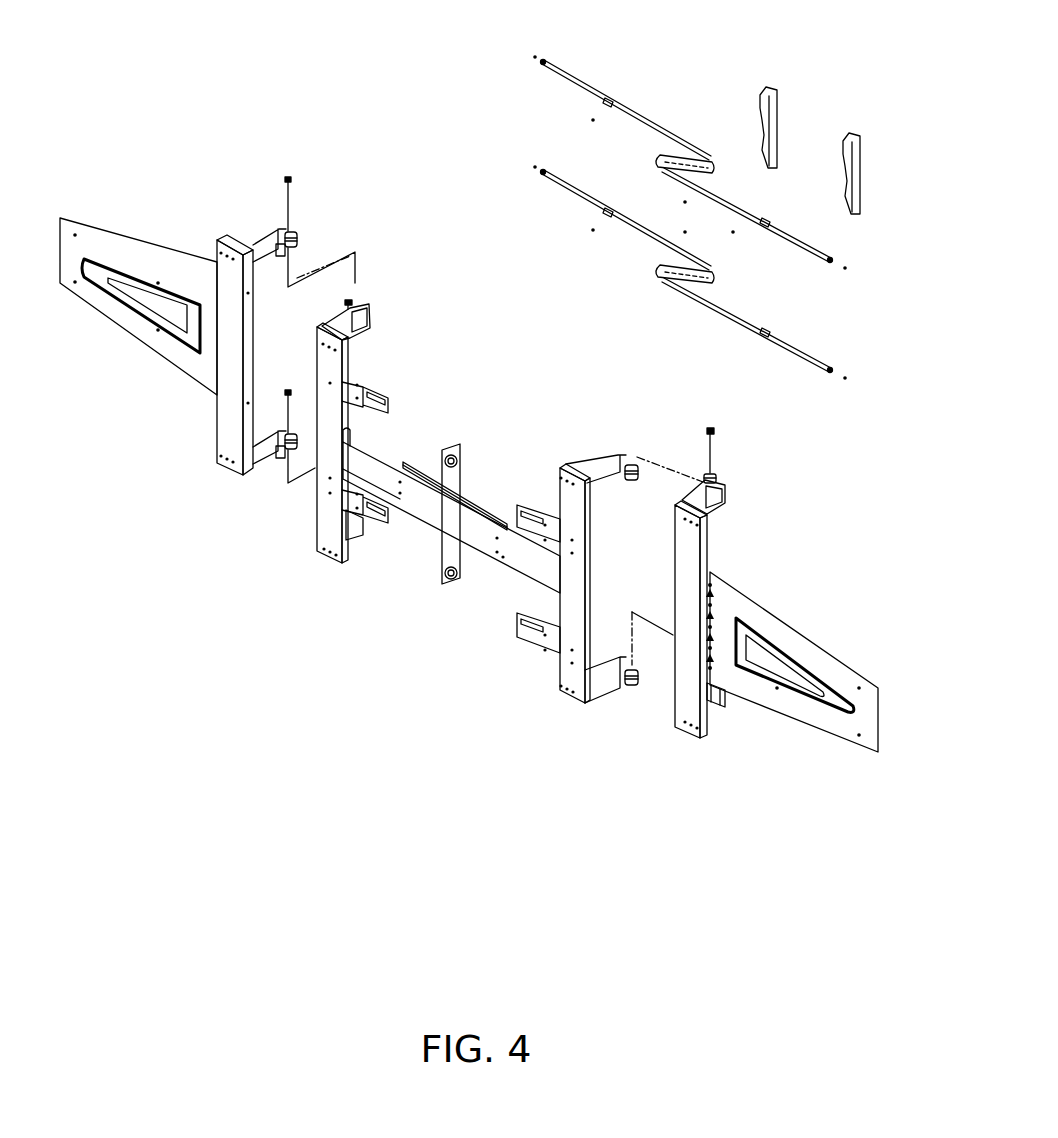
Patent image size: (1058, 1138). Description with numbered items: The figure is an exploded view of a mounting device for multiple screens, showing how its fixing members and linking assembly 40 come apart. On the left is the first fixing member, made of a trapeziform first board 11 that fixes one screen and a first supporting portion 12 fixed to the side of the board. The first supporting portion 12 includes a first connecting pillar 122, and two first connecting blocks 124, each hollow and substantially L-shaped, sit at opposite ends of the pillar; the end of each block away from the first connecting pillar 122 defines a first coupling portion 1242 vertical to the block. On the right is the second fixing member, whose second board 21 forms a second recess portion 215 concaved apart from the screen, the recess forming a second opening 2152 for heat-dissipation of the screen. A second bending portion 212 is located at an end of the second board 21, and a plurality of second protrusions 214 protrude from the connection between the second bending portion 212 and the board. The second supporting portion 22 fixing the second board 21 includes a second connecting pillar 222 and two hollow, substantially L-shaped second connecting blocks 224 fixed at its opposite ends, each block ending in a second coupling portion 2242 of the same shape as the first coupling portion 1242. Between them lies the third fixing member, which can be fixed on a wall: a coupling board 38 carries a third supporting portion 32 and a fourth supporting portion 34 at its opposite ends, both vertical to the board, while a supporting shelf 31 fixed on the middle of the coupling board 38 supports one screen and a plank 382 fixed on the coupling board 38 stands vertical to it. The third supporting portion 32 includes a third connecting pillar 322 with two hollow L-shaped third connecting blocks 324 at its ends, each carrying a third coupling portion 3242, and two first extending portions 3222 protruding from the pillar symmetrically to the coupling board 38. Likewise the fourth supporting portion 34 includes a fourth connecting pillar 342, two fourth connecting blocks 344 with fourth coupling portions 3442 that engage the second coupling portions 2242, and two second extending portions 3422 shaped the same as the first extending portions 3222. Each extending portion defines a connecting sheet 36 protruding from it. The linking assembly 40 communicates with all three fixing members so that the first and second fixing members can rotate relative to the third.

The first board 11 is at (122, 252).
The first supporting portion 12 is at (140, 172).
The first connecting pillar 122 is at (227, 265).
The first connecting block 124 is at (244, 245).
The first coupling portion 1242 is at (295, 232).
The second board 21 is at (788, 690).
The second bending portion 212 is at (722, 707).
The second protrusions 214 is at (713, 638).
The second recess portion 215 is at (830, 697).
The second opening 2152 is at (777, 642).
The second supporting portion 22 is at (788, 443).
The second connecting pillar 222 is at (687, 547).
The second connecting block 224 is at (710, 487).
The second coupling portion 2242 is at (702, 480).
The supporting shelf 31 is at (775, 90).
The third supporting portion 32 is at (443, 268).
The third connecting pillar 322 is at (322, 377).
The first extending portions 3222 is at (350, 493).
The third connecting block 324 is at (348, 317).
The third coupling portion 3242 is at (350, 305).
The fourth supporting portion 34 is at (563, 792).
The fourth connecting pillar 342 is at (570, 692).
The second extending portions 3422 is at (553, 648).
The fourth connecting block 344 is at (613, 682).
The fourth coupling portion 3442 is at (633, 690).
The connecting sheet 36 is at (385, 522).
The coupling board 38 is at (515, 553).
The plank 382 is at (452, 483).
The linking assembly 40 is at (657, 113).